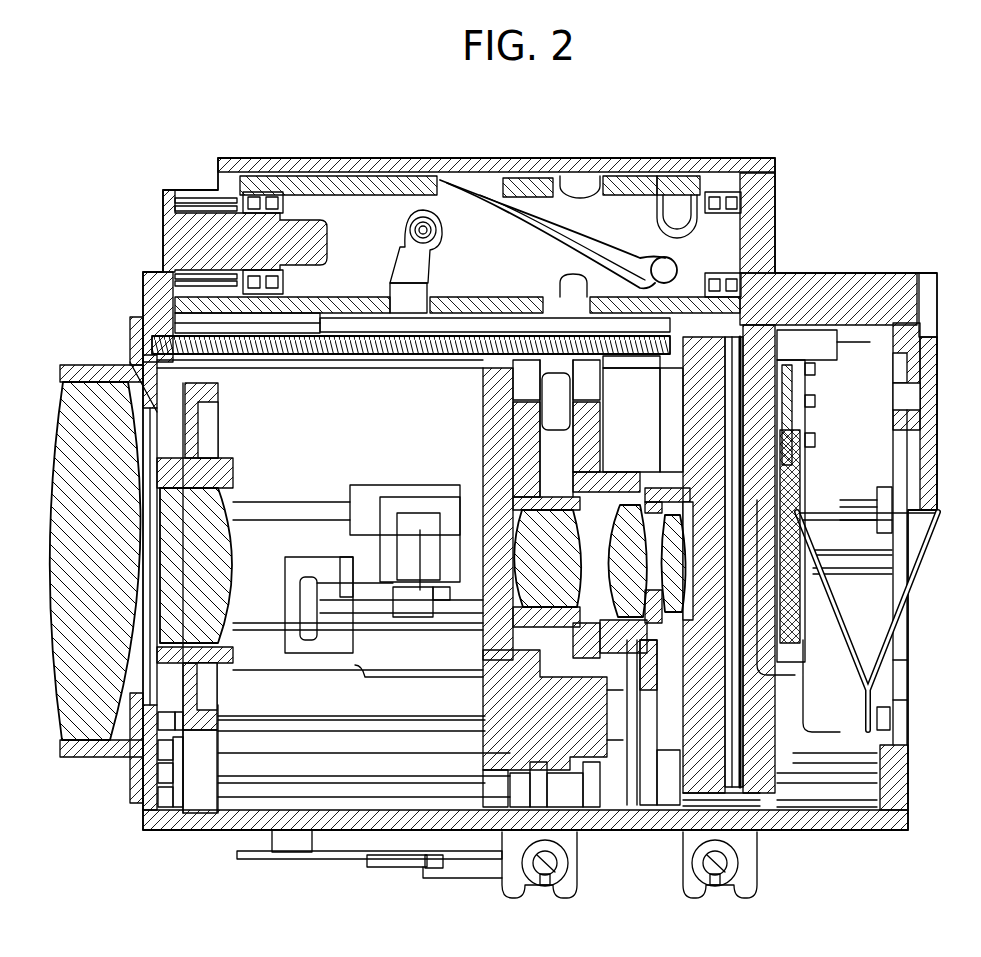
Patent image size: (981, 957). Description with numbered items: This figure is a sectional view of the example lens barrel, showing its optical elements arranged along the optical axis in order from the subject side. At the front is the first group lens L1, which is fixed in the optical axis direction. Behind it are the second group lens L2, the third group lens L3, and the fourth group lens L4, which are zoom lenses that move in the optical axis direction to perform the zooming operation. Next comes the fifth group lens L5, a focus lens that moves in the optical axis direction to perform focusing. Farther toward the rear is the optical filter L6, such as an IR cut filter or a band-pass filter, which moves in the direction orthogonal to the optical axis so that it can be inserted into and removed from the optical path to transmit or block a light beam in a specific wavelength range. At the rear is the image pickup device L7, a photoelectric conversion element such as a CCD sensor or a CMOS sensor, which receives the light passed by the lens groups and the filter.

The first group lens L1 is at (84, 400).
The second group lens L2 is at (178, 487).
The third group lens L3 is at (533, 522).
The fourth group lens L4 is at (618, 520).
The fifth group lens L5 is at (670, 513).
The optical filter L6 is at (742, 385).
The image pickup device L7 is at (780, 470).